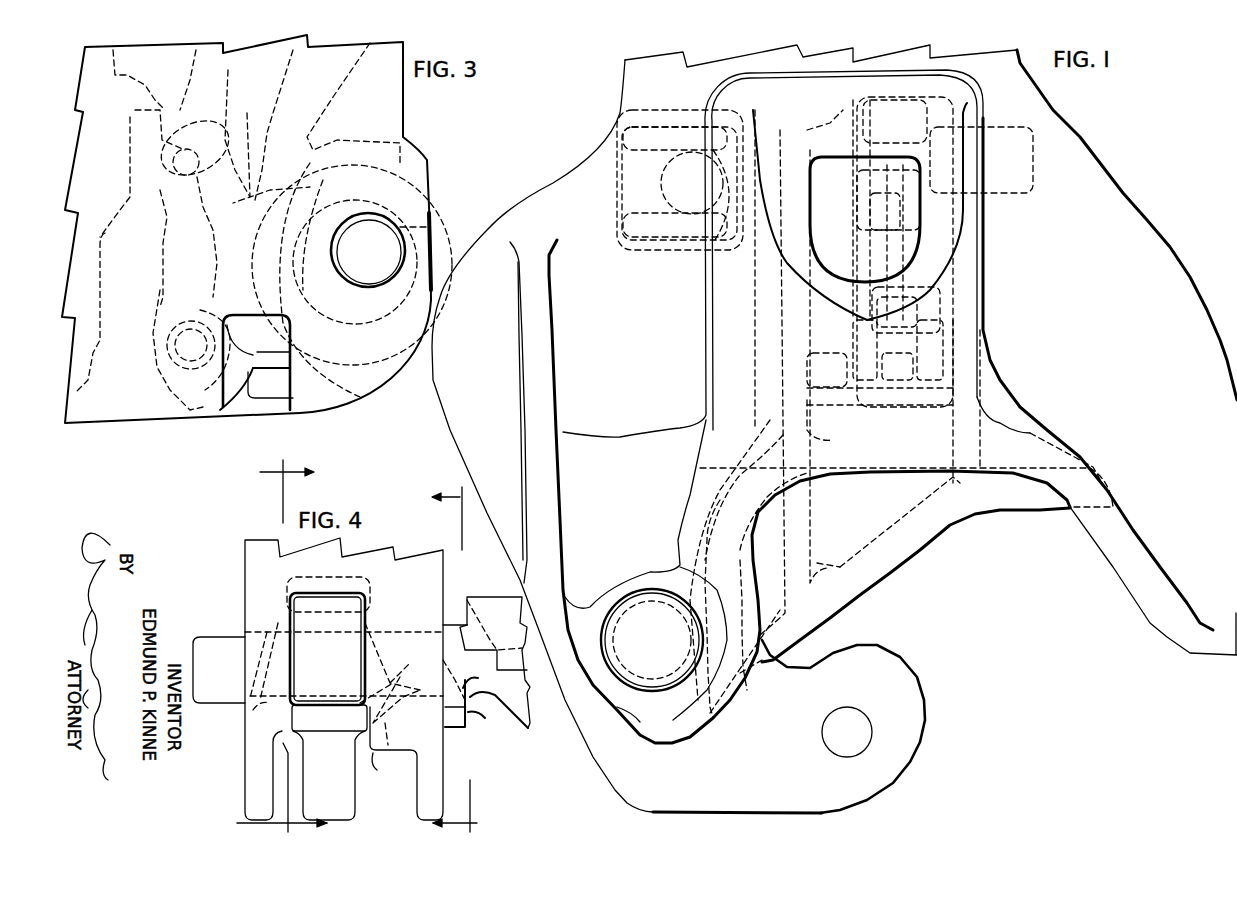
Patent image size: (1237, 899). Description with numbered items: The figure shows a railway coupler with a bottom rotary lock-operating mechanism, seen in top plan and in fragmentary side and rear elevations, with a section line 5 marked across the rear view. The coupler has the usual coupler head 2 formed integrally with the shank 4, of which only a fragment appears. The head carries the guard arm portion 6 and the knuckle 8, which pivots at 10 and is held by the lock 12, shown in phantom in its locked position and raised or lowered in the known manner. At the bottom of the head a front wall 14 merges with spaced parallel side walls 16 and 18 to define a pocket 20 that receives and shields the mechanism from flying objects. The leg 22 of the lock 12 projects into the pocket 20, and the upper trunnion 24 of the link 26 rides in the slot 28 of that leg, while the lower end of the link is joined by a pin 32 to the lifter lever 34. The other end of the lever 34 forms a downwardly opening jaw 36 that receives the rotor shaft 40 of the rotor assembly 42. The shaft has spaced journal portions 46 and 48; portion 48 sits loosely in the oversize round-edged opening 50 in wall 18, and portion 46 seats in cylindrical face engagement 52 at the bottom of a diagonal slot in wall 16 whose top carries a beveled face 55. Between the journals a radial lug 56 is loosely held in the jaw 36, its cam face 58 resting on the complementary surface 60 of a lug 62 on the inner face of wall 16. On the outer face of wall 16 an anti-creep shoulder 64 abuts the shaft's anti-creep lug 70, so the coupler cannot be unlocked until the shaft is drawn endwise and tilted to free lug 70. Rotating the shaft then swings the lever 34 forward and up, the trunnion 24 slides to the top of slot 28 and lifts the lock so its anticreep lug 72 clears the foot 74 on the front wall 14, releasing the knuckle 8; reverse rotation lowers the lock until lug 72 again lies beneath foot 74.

In FIG. 1, the coupler head 2 is at (834, 428).
In FIG. 1, the shank 4 is at (663, 95).
In FIG. 1, the guard arm portion 6 is at (987, 390).
In FIG. 4, the guard arm portion 6 is at (439, 659).
In FIG. 1, the knuckle 8 is at (790, 526).
In FIG. 1, the knuckle pivot 10 is at (637, 617).
In FIG. 3, the lock 12 is at (217, 77).
In FIG. 1, the lock 12 is at (773, 253).
In FIG. 1, the front wall 14 is at (880, 395).
In FIG. 1, the side wall 16 is at (920, 290).
In FIG. 4, the side wall 16 is at (444, 704).
In FIG. 1, the side wall 18 is at (945, 395).
In FIG. 4, the side wall 18 is at (344, 679).
In FIG. 3, the pocket 20 is at (97, 347).
In FIG. 3, the lock leg 22 is at (311, 137).
In FIG. 3, the upper trunnion 24 is at (195, 148).
In FIG. 3, the link 26 is at (160, 268).
In FIG. 3, the slot 28 is at (170, 120).
In FIG. 3, the pin 32 is at (157, 338).
In FIG. 3, the lifter lever 34 is at (272, 363).
In FIG. 4, the lifter lever 34 is at (329, 775).
In FIG. 3, the jaw 36 is at (436, 250).
In FIG. 4, the jaw 36 is at (327, 649).
In FIG. 3, the rotor shaft 40 is at (368, 250).
In FIG. 4, the rotor shaft 40 is at (207, 645).
In FIG. 4, the rotor assembly 42 is at (500, 600).
In FIG. 4, the journal portion 46 is at (425, 628).
In FIG. 4, the journal portion 48 is at (245, 625).
In FIG. 4, the round-edged opening 50 is at (277, 628).
In FIG. 4, the cylindrical face engagement 52 is at (405, 735).
In FIG. 4, the beveled face 55 is at (383, 600).
In FIG. 4, the lug 56 is at (326, 737).
In FIG. 4, the cam face 58 is at (410, 690).
In FIG. 4, the complementary surface 60 is at (385, 760).
In FIG. 4, the lug 62 is at (377, 780).
In FIG. 4, the anti-creep shoulder 64 is at (462, 738).
In FIG. 4, the anti-creep lug 70 is at (475, 720).
In FIG. 3, the anticreep lug 72 is at (130, 143).
In FIG. 3, the foot 74 is at (139, 79).
In FIG. 4, the section line 5- 5 is at (304, 646).